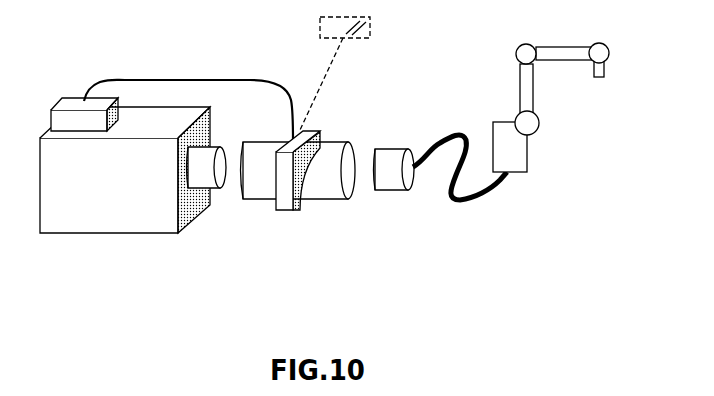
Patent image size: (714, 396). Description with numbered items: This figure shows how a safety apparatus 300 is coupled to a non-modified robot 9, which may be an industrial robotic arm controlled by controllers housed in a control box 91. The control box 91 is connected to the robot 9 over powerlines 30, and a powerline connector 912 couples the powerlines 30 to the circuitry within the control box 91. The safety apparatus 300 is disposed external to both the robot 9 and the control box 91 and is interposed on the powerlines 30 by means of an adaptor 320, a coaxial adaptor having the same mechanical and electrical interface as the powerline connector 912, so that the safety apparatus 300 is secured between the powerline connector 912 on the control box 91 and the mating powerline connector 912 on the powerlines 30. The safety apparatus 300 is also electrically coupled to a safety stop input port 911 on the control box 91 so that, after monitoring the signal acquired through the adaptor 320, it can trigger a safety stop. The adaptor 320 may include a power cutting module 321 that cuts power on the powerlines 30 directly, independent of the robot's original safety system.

The robot 9 is at (508, 87).
The powerlines 30 is at (477, 200).
The control box 91 is at (92, 208).
The safety stop input port 911 is at (70, 100).
The powerline connector 912 is at (205, 178).
The safety apparatus 300 is at (298, 223).
The adaptor 320 is at (265, 190).
The power cutting module 321 is at (322, 24).